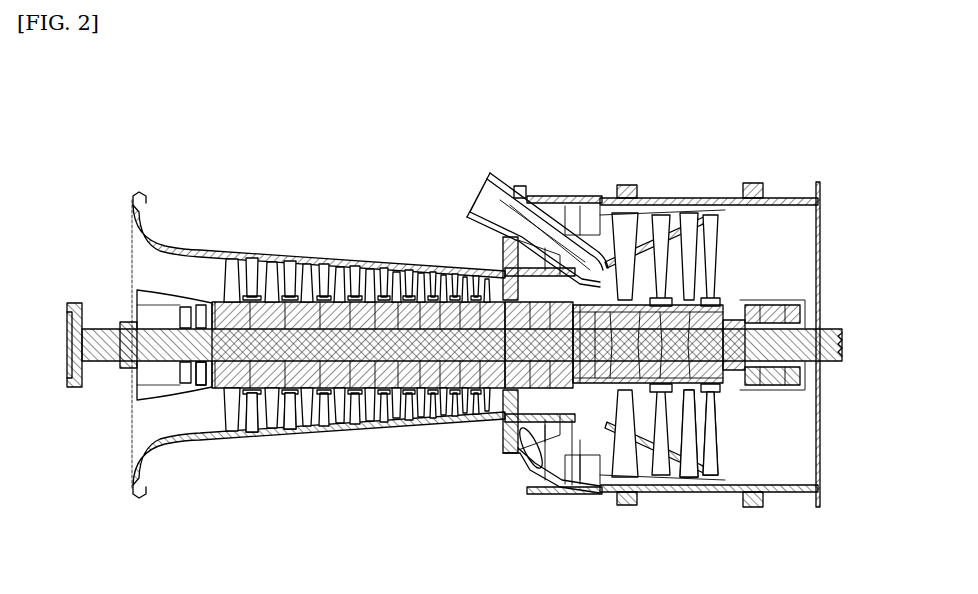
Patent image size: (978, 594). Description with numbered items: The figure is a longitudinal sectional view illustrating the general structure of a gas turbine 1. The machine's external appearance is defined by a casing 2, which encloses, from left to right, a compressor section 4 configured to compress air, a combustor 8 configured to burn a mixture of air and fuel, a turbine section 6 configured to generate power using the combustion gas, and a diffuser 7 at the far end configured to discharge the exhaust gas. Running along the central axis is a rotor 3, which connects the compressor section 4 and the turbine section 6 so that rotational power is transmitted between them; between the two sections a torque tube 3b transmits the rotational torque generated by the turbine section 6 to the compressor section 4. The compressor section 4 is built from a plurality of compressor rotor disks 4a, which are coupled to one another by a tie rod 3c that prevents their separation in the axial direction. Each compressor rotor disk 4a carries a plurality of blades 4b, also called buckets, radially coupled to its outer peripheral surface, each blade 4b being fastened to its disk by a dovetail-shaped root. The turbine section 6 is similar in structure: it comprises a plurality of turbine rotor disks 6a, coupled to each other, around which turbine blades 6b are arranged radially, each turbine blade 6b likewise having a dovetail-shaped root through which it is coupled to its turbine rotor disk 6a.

The gas turbine 1 is at (456, 327).
The casing 2 is at (170, 244).
The rotor 3 is at (54, 306).
The torque tube 3b is at (527, 457).
The tie rod 3c is at (208, 386).
The compressor section 4 is at (358, 337).
The compressor rotor disk 4a is at (250, 392).
The blade 4b is at (283, 440).
The turbine section 6 is at (695, 329).
The turbine rotor disk 6a is at (702, 470).
The turbine blade 6b is at (718, 436).
The diffuser 7 is at (828, 207).
The combustor 8 is at (507, 165).